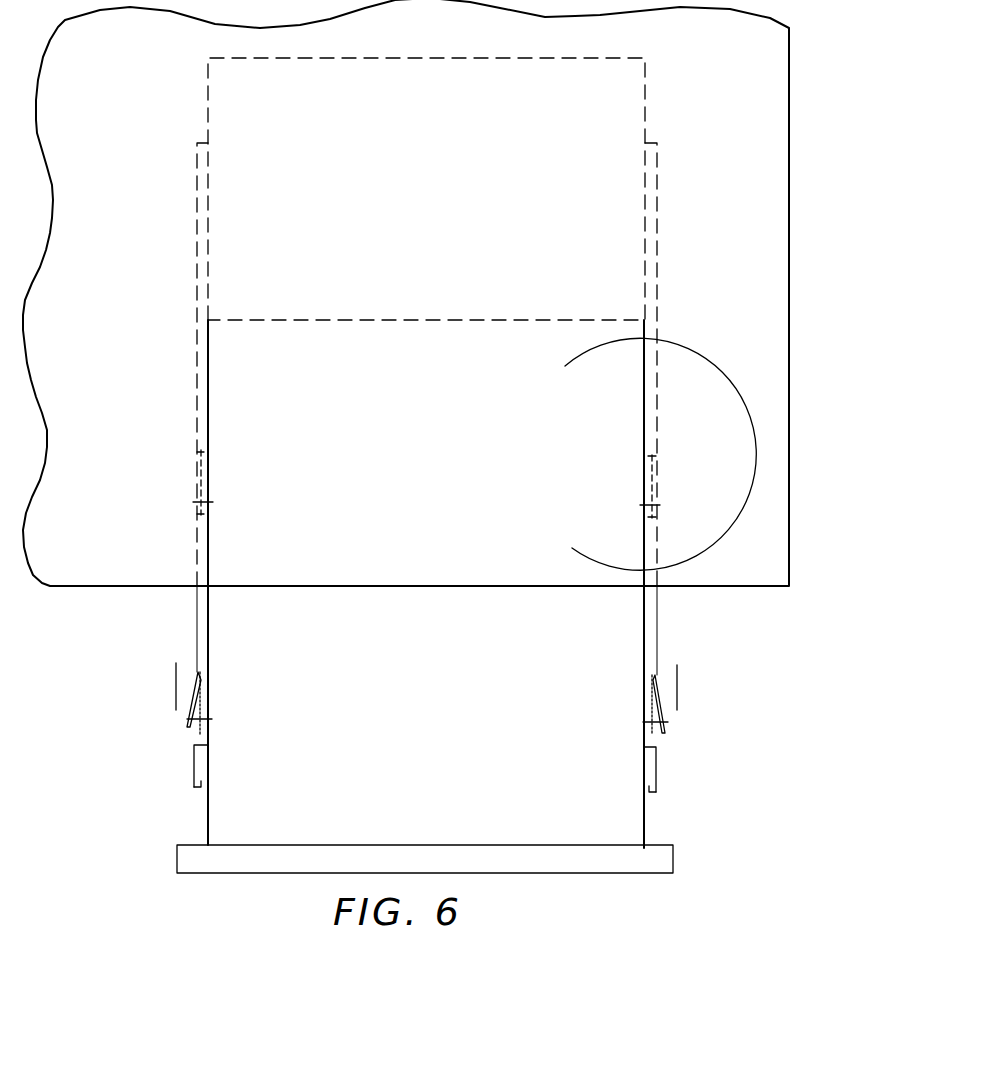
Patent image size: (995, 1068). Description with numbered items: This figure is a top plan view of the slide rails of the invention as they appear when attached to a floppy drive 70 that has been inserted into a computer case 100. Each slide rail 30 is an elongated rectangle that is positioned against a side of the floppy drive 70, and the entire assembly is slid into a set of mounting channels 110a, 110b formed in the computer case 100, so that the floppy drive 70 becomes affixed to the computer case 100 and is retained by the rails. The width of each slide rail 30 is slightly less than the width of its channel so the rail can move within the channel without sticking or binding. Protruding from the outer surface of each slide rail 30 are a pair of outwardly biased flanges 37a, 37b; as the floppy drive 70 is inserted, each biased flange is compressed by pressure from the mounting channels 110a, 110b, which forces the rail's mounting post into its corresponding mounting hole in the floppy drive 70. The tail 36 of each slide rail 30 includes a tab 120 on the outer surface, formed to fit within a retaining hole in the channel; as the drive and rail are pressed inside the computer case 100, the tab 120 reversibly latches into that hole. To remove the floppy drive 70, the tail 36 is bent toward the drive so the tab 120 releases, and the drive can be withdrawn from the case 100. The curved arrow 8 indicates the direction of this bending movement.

The computer case 100 is at (829, 246).
The mounting channel 110a is at (205, 205).
The mounting channel 110b is at (652, 163).
The slide rail 30 is at (690, 614).
The rotation direction arrow 8 is at (646, 454).
The outwardly biased flange 37a is at (200, 503).
The outwardly biased flange 37b is at (187, 726).
The tab 120 is at (193, 775).
The tail 36 is at (193, 778).
The floppy drive 70 is at (630, 792).